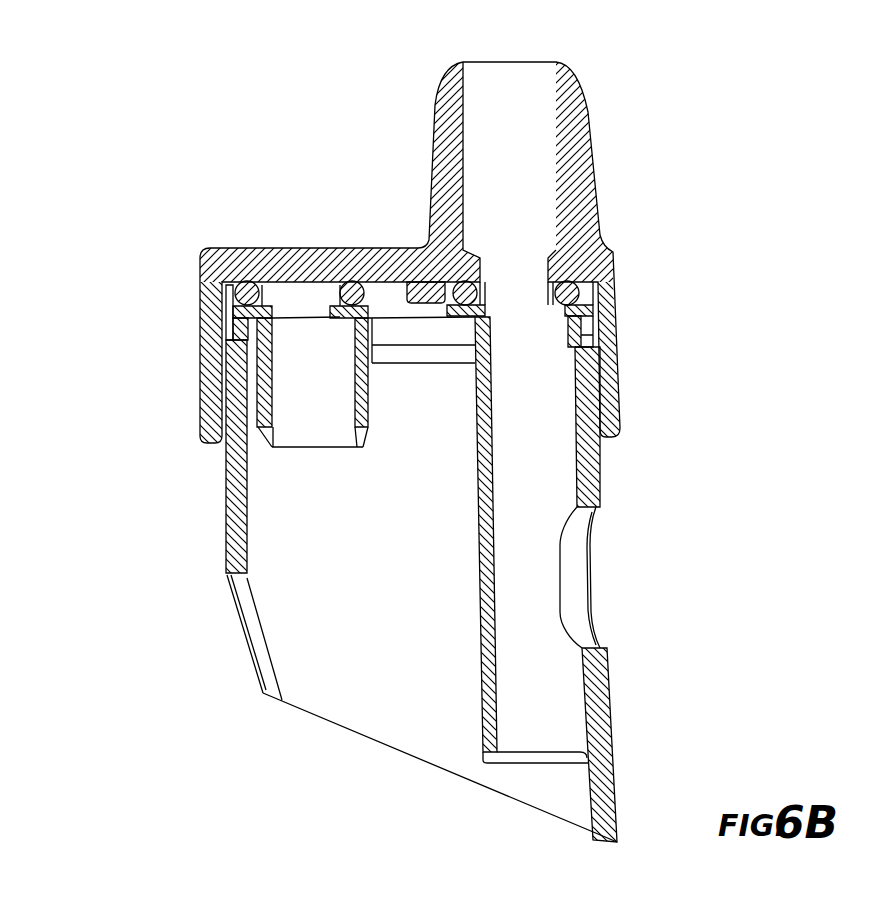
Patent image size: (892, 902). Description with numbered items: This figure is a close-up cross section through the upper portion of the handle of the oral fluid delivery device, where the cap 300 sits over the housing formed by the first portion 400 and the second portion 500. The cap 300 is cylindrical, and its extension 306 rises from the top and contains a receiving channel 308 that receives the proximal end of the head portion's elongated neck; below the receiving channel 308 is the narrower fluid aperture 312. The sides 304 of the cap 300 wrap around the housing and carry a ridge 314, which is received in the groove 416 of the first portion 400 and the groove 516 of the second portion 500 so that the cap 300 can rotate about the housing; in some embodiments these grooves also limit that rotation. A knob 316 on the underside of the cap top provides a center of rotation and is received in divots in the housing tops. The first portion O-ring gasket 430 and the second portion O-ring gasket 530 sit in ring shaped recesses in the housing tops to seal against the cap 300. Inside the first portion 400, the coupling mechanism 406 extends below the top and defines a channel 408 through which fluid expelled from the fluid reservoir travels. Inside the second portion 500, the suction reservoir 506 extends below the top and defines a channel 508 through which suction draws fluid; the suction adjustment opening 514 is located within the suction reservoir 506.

The cap 300 is at (376, 191).
The sides 304 is at (614, 363).
The extension 306 is at (580, 143).
The receiving channel 308 is at (520, 88).
The fluid aperture 312 is at (537, 258).
The ridge 314 is at (594, 337).
The knob 316 is at (424, 292).
The gasket 530 is at (600, 271).
The gasket 430 is at (237, 291).
The groove 416 is at (228, 350).
The coupling mechanism 406 is at (262, 406).
The channel 408 is at (297, 423).
The first portion 400 is at (199, 511).
The second portion 500 is at (627, 791).
The suction adjustment opening 514 is at (595, 585).
The groove 516 is at (577, 350).
The channel 508 is at (524, 718).
The suction reservoir 506 is at (484, 748).